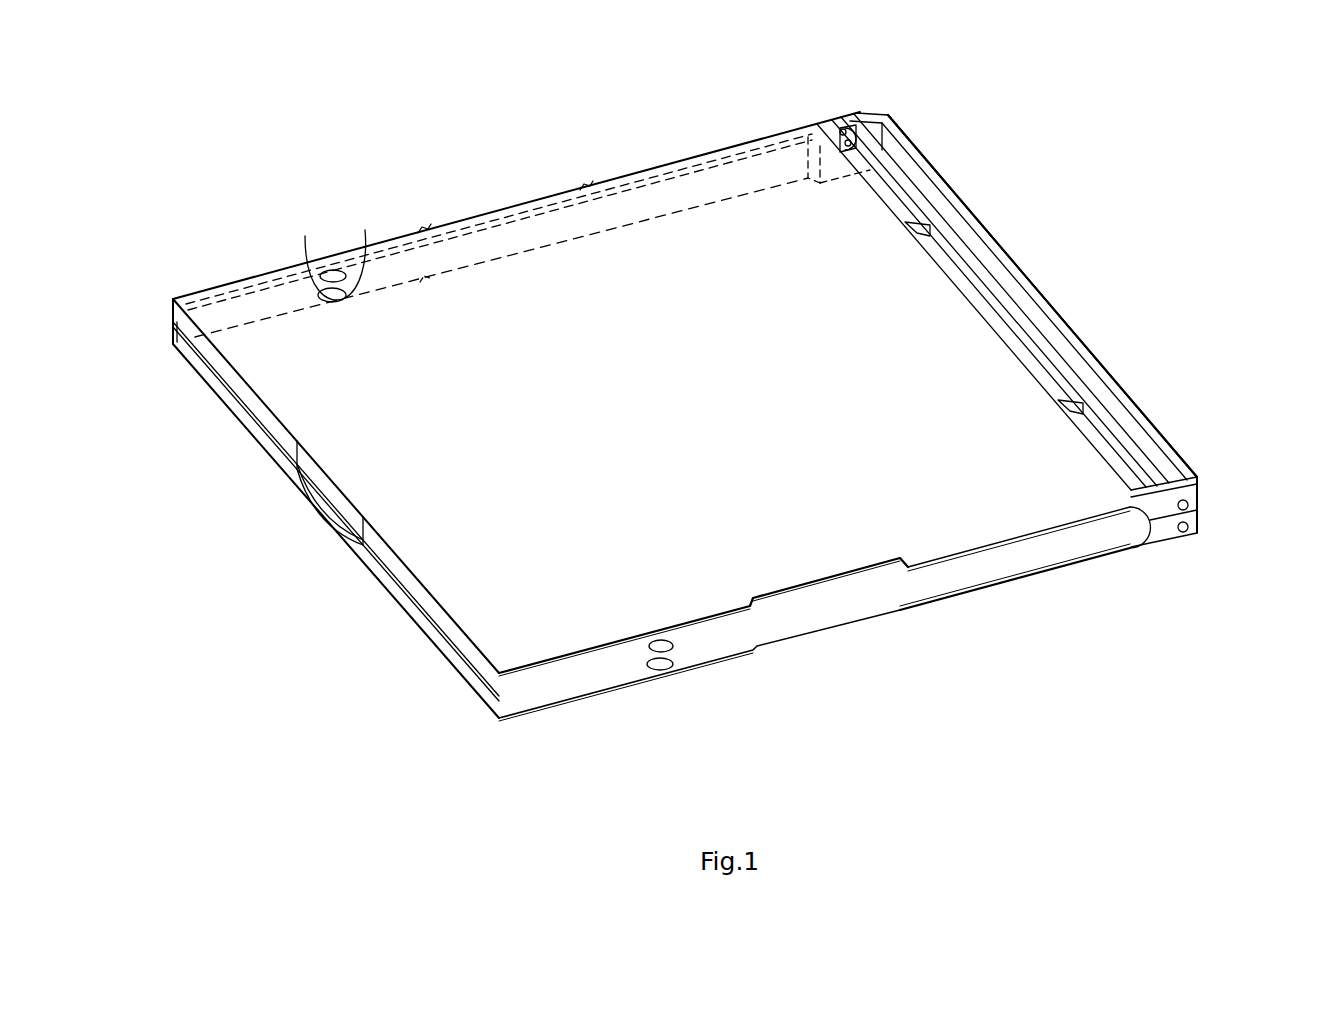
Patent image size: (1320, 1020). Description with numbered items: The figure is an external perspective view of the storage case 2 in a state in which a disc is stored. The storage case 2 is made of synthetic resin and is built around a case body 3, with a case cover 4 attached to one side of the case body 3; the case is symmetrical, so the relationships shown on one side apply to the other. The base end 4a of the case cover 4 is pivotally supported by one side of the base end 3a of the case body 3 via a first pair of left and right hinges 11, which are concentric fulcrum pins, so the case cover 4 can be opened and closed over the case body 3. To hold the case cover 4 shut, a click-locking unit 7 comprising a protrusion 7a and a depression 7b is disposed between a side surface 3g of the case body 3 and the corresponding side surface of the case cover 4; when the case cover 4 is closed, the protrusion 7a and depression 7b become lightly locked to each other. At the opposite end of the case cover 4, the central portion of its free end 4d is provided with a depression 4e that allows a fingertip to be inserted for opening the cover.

The storage case 2 is at (438, 168).
The case body 3 is at (976, 300).
The base end of the case body 3a is at (1085, 330).
The side surface of the case body 3g is at (532, 232).
The case cover 4 is at (688, 240).
The base end of the case cover 4a is at (1158, 508).
The free end of the case cover 4d is at (229, 371).
The depression 4e is at (308, 478).
The click-locking unit 7 is at (343, 123).
The protrusion 7a is at (332, 277).
The depression 7b is at (342, 280).
The first hinges (fulcrum pins) 11 is at (1192, 526).